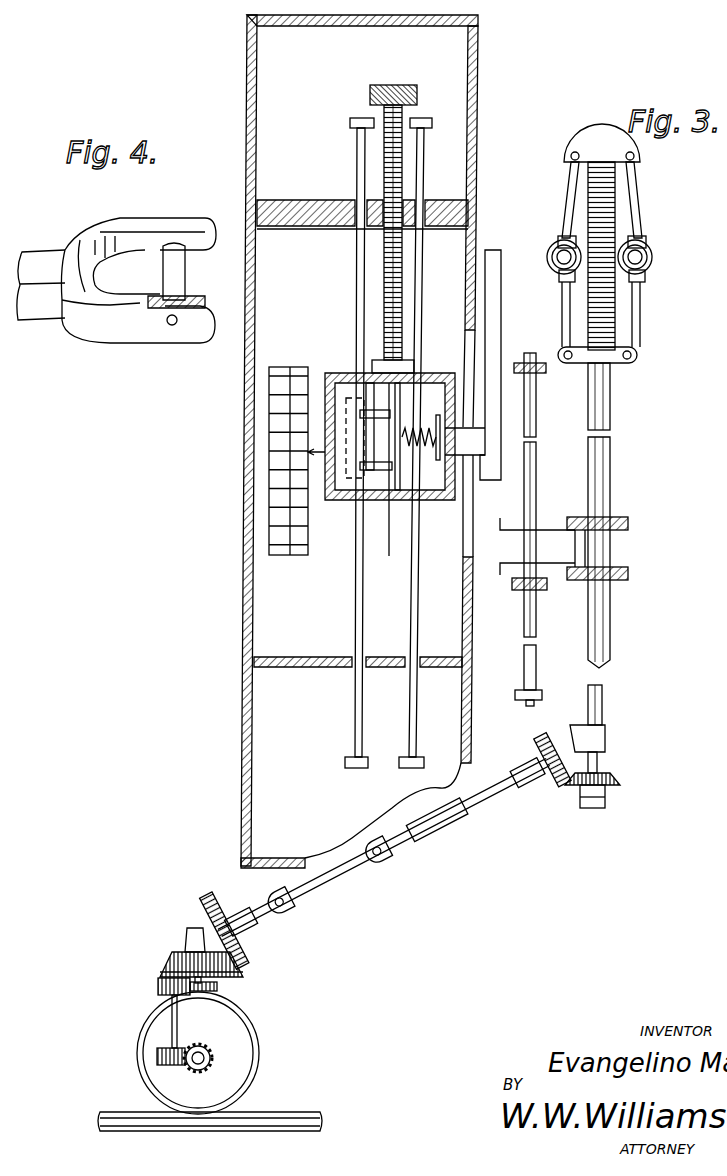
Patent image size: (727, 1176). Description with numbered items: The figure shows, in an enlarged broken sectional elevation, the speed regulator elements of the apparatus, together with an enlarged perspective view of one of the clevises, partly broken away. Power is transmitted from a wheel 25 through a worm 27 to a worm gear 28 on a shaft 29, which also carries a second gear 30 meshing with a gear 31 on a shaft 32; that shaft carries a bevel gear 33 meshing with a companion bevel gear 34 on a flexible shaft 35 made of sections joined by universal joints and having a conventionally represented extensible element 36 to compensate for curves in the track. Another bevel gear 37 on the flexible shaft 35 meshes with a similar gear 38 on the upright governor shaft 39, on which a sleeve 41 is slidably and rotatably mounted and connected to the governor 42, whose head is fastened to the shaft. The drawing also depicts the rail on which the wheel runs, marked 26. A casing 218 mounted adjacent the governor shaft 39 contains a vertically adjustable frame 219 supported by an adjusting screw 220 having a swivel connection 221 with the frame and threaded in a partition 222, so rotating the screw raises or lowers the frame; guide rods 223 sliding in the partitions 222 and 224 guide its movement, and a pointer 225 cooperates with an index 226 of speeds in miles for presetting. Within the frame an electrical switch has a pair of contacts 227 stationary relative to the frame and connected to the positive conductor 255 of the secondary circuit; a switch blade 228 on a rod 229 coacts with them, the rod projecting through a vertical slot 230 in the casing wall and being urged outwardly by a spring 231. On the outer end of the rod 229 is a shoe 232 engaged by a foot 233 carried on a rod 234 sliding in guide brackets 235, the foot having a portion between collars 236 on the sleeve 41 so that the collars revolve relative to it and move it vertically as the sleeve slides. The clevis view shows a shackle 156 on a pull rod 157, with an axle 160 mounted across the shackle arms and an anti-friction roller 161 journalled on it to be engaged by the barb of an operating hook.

In FIG. 3, the casing 218 is at (247, 62).
In FIG. 3, the partition 222 is at (305, 188).
In FIG. 3, the partition 224 is at (316, 630).
In FIG. 3, the adjusting screw 220 is at (385, 267).
In FIG. 3, the swivel connection 221 is at (406, 364).
In FIG. 3, the guide rods 223 is at (417, 143).
In FIG. 3, the vertically adjustable frame 219 is at (336, 376).
In FIG. 3, the rod 229 is at (368, 410).
In FIG. 3, the switch blade 228 is at (340, 478).
In FIG. 3, the positive conductor 255 is at (392, 396).
In FIG. 3, the contacts 227 is at (400, 432).
In FIG. 3, the spring 231 is at (430, 450).
In FIG. 3, the index 226 is at (269, 460).
In FIG. 3, the pointer 225 is at (308, 451).
In FIG. 3, the vertical slot 230 is at (463, 536).
In FIG. 3, the rod 234 is at (535, 426).
In FIG. 3, the guide brackets 235 is at (540, 371).
In FIG. 3, the shoe 232 is at (500, 479).
In FIG. 3, the foot 233 is at (506, 500).
In FIG. 3, the collars 236 is at (628, 524).
In FIG. 3, the sleeve 41 is at (606, 500).
In FIG. 3, the governor 42 is at (565, 291).
In FIG. 3, the governor shaft 39 is at (604, 700).
In FIG. 3, the bevel gear 38 is at (615, 787).
In FIG. 3, the bevel gear 37 is at (540, 737).
In FIG. 3, the extensible element 36 is at (391, 861).
In FIG. 3, the flexible shaft 35 is at (334, 889).
In FIG. 3, the bevel gear 34 is at (193, 930).
In FIG. 3, the bevel gear 33 is at (167, 960).
In FIG. 3, the shaft 32 is at (240, 973).
In FIG. 3, the second gear 30 is at (158, 986).
In FIG. 3, the gear 31 is at (216, 988).
In FIG. 3, the shaft 29 is at (172, 1022).
In FIG. 3, the worm gear 28 is at (157, 1053).
In FIG. 3, the worm 27 is at (216, 1058).
In FIG. 3, the wheel 25 is at (240, 1037).
In FIG. 3, the rail 26 is at (100, 1110).
In FIG. 4, the pull rod 157 is at (50, 237).
In FIG. 4, the shackle 156 is at (118, 208).
In FIG. 4, the anti-friction roller 161 is at (228, 276).
In FIG. 4, the axle 160 is at (176, 326).